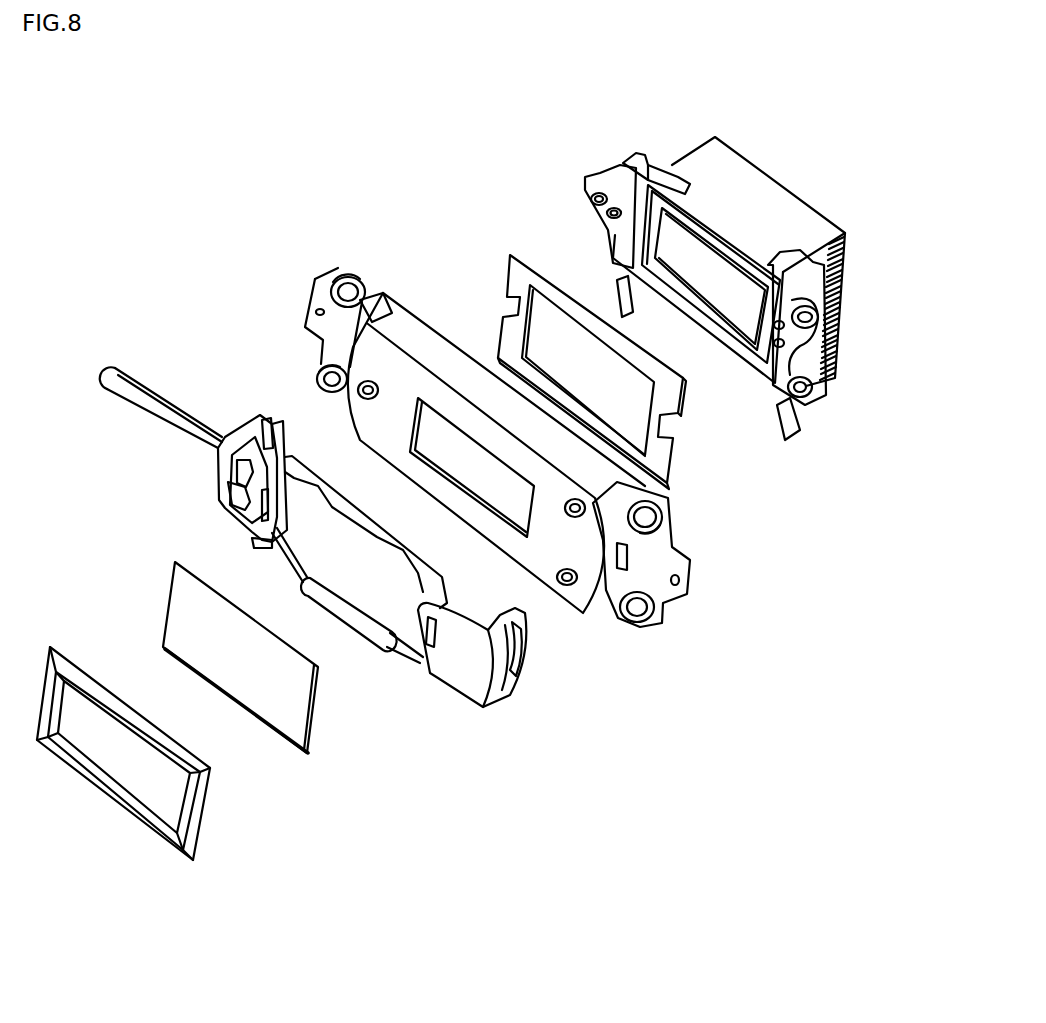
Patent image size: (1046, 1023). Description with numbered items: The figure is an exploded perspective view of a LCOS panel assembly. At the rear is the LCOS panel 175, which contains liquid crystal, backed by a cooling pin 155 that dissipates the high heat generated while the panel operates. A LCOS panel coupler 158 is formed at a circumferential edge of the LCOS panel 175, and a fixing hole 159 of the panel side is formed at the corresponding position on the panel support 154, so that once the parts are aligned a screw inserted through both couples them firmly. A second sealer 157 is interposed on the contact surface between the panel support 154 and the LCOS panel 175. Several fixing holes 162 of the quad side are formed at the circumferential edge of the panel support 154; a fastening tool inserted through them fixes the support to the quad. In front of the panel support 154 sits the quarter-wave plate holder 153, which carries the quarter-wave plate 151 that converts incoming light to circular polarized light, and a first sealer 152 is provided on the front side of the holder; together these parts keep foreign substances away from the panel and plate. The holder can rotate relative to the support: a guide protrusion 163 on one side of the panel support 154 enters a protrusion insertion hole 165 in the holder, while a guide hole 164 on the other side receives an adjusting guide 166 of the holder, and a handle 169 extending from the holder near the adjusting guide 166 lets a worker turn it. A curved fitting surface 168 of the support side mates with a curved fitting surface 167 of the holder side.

The quarter-wave plate 151 is at (290, 726).
The first sealer 152 is at (178, 835).
The quarter-wave plate holder 153 is at (465, 674).
The panel support 154 is at (587, 556).
The cooling pin 155 is at (788, 205).
The second sealer 157 is at (512, 274).
The LCOS panel coupler 158 is at (818, 329).
The fixing hole of the panel side 159 is at (556, 585).
The fixing hole of the quad side 162 is at (637, 612).
The guide protrusion 163 is at (672, 586).
The guide hole 164 is at (382, 292).
The protrusion insertion hole 165 is at (525, 658).
The adjusting guide 166 is at (275, 423).
The fitting surface of the holder side 167 is at (498, 663).
The fitting surface of the support side 168 is at (608, 513).
The handle 169 is at (148, 393).
The LCOS panel 175 is at (723, 280).